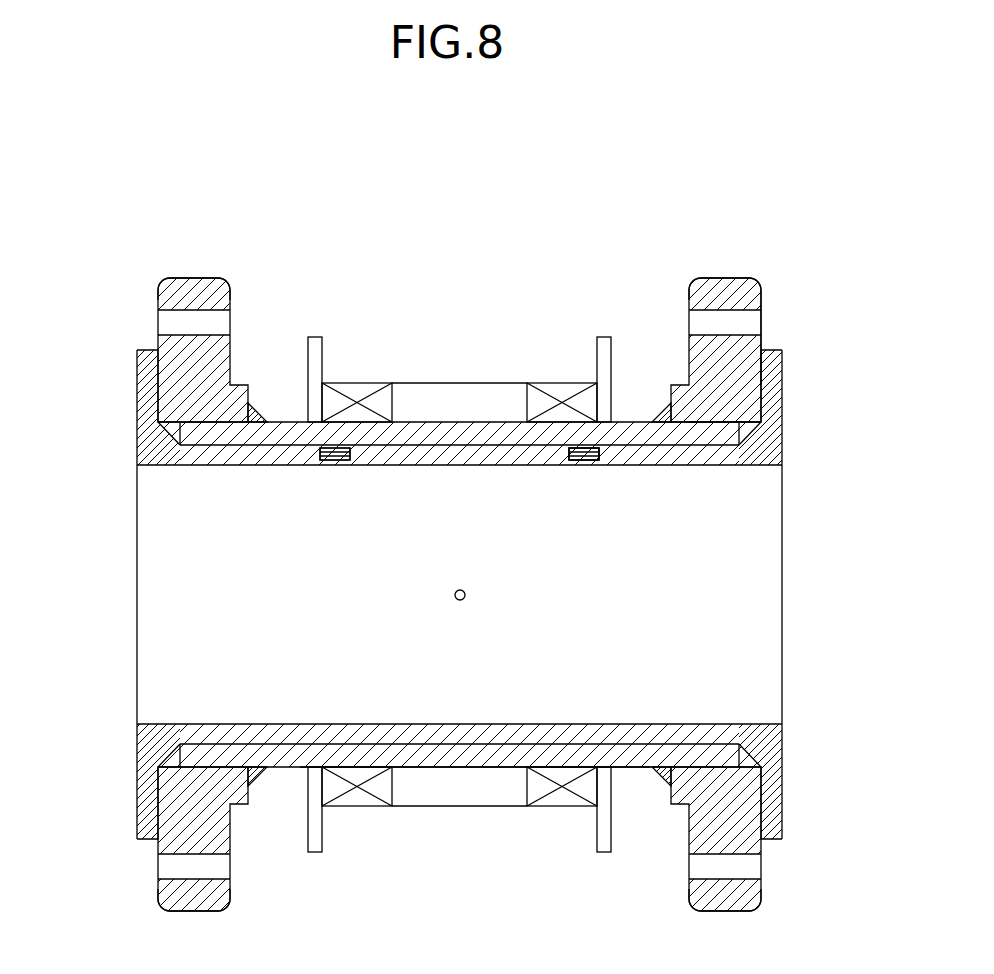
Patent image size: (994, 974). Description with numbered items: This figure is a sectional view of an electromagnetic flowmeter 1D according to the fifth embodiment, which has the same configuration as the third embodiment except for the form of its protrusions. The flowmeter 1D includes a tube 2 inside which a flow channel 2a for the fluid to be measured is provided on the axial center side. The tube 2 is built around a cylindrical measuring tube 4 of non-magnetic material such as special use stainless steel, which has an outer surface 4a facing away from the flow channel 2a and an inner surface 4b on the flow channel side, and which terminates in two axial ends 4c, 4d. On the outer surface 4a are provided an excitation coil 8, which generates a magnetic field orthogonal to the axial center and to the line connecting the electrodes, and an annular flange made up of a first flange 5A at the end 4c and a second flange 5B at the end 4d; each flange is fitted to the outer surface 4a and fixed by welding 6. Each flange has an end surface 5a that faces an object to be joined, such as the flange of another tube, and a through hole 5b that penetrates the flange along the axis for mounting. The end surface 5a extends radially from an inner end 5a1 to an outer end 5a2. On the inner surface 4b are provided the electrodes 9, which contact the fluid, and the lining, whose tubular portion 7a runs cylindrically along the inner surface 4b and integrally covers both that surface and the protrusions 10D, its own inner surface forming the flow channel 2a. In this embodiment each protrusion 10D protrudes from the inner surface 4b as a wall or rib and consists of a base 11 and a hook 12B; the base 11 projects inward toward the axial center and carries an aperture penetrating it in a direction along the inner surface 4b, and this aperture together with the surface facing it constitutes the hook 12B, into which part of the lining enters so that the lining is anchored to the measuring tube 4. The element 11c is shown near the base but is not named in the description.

The electromagnetic flowmeter 1D is at (762, 178).
The tube 2 is at (739, 276).
The flow channel 2a is at (765, 608).
The measuring tube 4 is at (461, 586).
The outer surface 4a is at (290, 420).
The inner surface 4b is at (206, 452).
The end 4c is at (742, 462).
The end 4d is at (178, 447).
The first flange 5A is at (688, 282).
The second flange 5B is at (160, 279).
The end surface 5a is at (160, 297).
The through hole 5b is at (185, 322).
The end 5a1 is at (742, 424).
The end 5a2 is at (762, 300).
The welding 6 is at (258, 412).
The tubular portion 7a is at (732, 723).
The excitation coil 8 is at (560, 383).
The electrode 9 is at (455, 595).
The protrusion 10D is at (320, 470).
The base 11 is at (585, 462).
The yoke holding portion 11c is at (360, 460).
The hook 12B is at (563, 458).